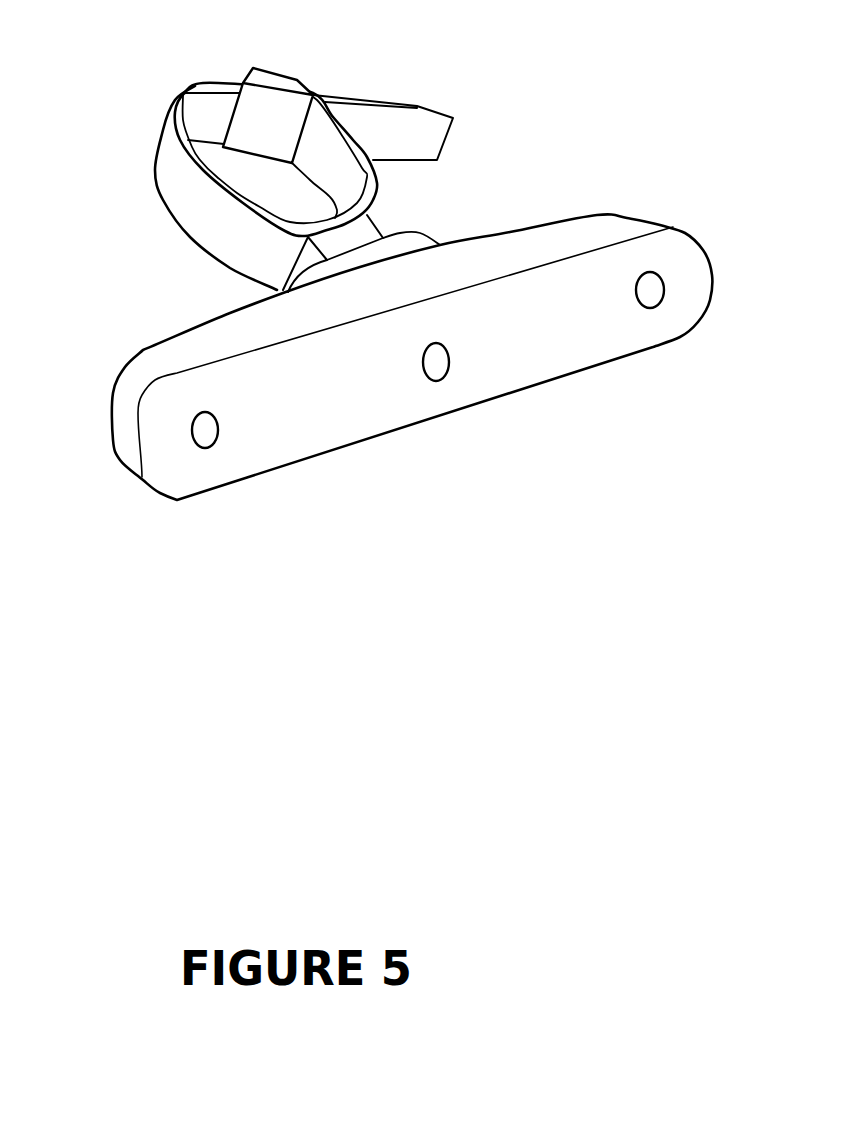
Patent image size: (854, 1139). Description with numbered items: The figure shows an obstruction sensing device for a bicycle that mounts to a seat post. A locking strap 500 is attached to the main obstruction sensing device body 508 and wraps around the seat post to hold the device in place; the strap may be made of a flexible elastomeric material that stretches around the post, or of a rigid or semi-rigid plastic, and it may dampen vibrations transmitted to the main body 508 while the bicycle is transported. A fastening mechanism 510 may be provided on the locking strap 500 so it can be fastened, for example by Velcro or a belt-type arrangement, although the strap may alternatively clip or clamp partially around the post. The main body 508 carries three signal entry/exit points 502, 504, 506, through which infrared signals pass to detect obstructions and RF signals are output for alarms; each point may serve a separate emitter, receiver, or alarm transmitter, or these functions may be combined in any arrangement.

The locking strap 500 is at (202, 117).
The signal entry/exit point 502 is at (205, 436).
The signal entry/exit point 504 is at (436, 362).
The signal entry/exit point 506 is at (651, 292).
The main obstruction sensing device body 508 is at (252, 325).
The fastening mechanism 510 is at (277, 117).